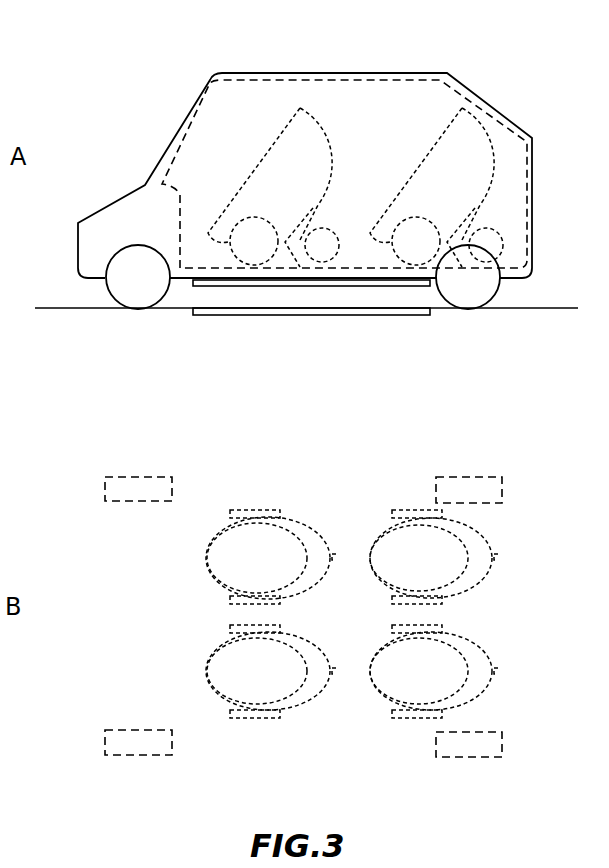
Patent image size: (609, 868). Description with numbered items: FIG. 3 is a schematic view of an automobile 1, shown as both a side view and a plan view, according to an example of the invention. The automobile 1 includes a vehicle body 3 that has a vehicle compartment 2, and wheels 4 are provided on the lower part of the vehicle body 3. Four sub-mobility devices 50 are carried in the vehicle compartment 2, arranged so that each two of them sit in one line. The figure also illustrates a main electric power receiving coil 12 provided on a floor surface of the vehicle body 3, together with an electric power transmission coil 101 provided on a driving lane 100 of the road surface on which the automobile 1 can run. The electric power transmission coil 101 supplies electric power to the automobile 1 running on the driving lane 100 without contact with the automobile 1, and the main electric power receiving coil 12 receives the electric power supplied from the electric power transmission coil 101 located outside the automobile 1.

The automobile 1 is at (300, 152).
The vehicle compartment 2 is at (378, 90).
The vehicle body 3 is at (192, 108).
The wheels 4 is at (137, 290).
The main electric power receiving coil 12 is at (283, 287).
The sub-mobility devices 50 is at (285, 147).
The driving lane 100 is at (567, 307).
The electric power transmission coil 101 is at (380, 317).